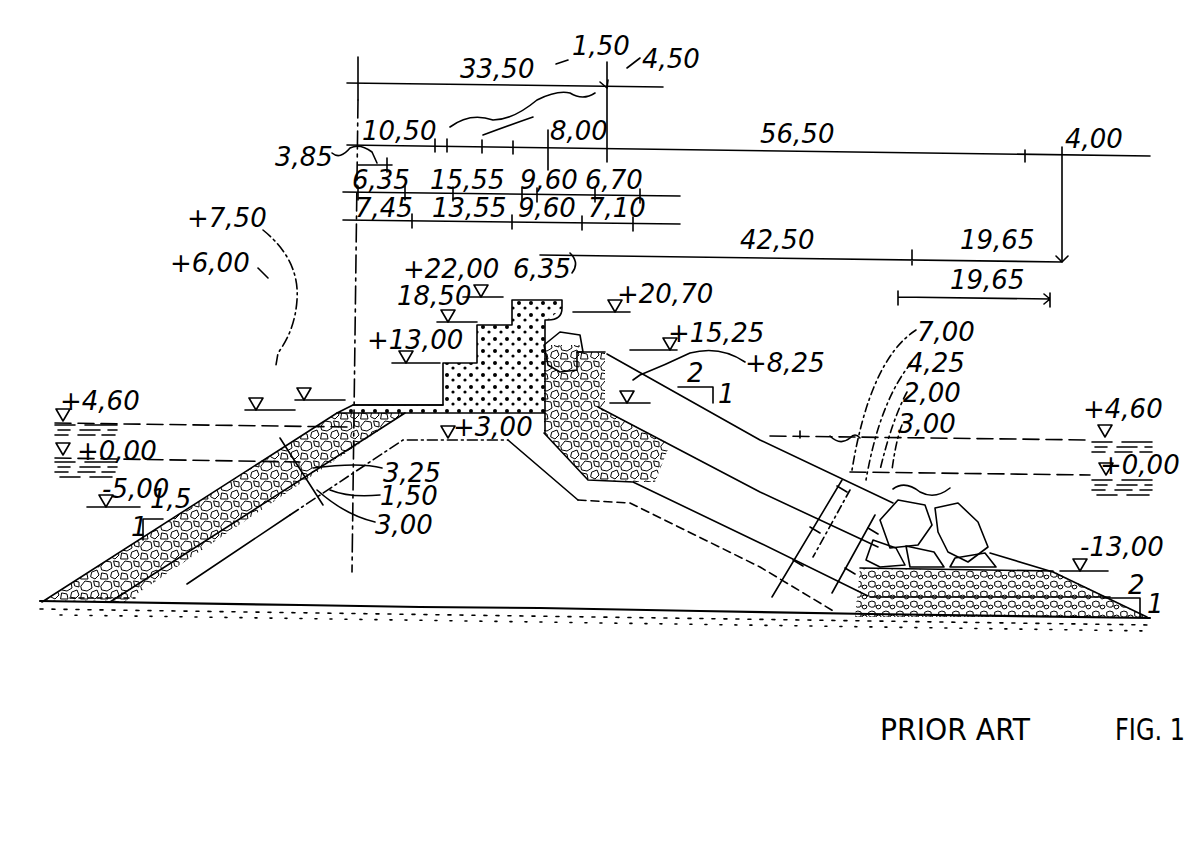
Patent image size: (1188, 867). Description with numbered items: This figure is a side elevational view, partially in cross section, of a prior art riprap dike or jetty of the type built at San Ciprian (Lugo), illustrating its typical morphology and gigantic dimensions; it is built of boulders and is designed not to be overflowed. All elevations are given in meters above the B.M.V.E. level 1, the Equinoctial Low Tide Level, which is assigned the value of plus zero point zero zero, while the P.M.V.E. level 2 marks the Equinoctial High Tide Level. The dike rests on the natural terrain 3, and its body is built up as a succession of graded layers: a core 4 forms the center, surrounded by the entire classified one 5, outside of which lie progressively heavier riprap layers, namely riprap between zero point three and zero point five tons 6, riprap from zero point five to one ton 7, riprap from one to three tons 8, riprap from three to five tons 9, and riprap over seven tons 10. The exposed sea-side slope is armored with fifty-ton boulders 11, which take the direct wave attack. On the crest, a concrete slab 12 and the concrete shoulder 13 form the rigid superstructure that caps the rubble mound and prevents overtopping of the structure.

The B.M.V.E. level 1 is at (187, 440).
The P.M.V.E. level 2 is at (172, 455).
The natural terrain 3 is at (493, 608).
The core 4 is at (407, 548).
The entire classified one 5 is at (562, 485).
The riprap between 0.3 and 0.5 t 6 is at (195, 576).
The riprap from 0.5 to 1.0 t 7 is at (805, 557).
The riprap from 1.0 to 3.0 t 8 is at (150, 570).
The riprap from 3.0 to 5.0 t 9 is at (278, 485).
The riprap over 7.0 t 10 is at (868, 562).
The 50-ton boulders 11 is at (870, 523).
The concrete slab 12 is at (380, 403).
The concrete shoulder 13 is at (372, 346).